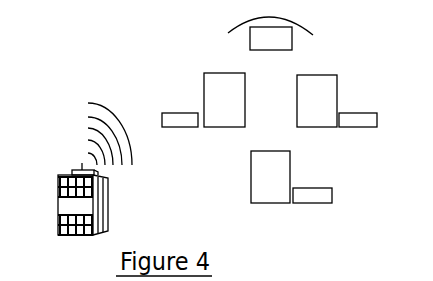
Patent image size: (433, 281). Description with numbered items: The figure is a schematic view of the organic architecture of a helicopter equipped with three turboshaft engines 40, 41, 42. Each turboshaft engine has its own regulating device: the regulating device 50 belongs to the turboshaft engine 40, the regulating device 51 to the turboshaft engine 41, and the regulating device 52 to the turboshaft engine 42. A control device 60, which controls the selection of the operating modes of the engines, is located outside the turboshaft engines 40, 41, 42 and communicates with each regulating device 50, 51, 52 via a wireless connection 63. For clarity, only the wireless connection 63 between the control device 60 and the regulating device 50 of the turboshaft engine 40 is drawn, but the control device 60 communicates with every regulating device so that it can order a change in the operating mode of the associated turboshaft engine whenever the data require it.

The turboshaft engine 40 is at (228, 120).
The turboshaft engine 41 is at (316, 120).
The turboshaft engine 42 is at (265, 195).
The regulating device 50 is at (178, 120).
The regulating device 51 is at (357, 118).
The regulating device 52 is at (328, 202).
The control device 60 is at (67, 207).
The wireless connection 63 is at (85, 113).